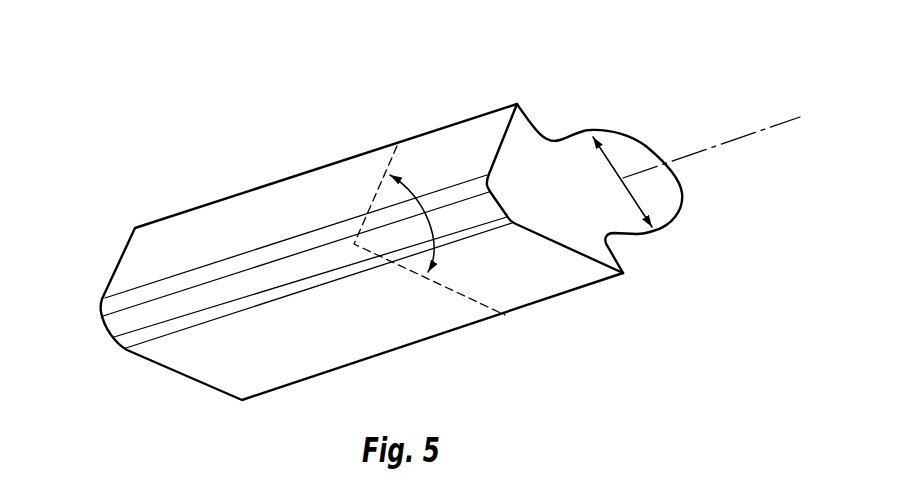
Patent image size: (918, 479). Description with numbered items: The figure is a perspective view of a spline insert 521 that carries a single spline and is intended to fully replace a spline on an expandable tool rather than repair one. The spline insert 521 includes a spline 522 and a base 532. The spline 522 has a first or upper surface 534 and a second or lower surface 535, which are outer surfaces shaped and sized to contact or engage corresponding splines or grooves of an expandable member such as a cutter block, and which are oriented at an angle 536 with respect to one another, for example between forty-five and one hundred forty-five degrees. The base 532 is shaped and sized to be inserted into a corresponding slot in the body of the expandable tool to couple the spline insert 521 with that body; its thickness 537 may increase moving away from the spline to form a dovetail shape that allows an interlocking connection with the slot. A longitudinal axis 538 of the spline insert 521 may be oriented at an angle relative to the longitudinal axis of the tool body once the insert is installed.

The spline insert 521 is at (102, 62).
The spline 522 is at (344, 158).
The base 532 is at (618, 131).
The first surface 534 is at (303, 222).
The second surface 535 is at (303, 346).
The angle 536 is at (440, 225).
The thickness 537 is at (630, 197).
The longitudinal axis 538 is at (743, 137).